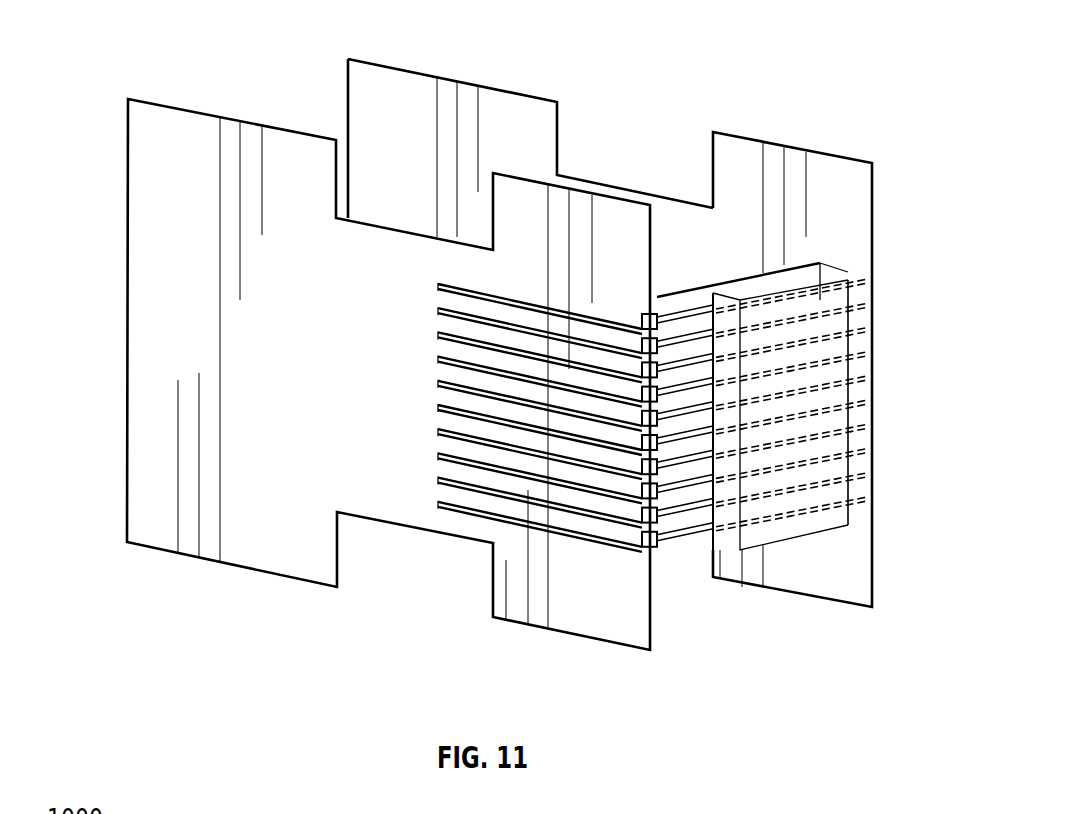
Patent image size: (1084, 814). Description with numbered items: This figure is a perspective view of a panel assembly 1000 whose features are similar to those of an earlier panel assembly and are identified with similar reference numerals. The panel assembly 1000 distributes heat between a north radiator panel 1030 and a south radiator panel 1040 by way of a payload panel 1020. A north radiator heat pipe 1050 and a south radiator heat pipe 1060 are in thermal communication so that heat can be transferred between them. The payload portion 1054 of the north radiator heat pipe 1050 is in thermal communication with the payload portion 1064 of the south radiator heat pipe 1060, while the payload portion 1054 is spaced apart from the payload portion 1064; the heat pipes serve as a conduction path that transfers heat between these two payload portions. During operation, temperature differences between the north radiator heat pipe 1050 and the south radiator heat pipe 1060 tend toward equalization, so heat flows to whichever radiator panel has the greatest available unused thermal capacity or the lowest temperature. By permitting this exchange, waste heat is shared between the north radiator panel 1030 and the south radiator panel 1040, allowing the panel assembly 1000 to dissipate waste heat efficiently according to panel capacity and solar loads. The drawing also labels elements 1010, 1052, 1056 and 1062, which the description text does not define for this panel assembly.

The panel assembly 1000 is at (148, 38).
The connector 1010 is at (820, 270).
The payload panel 1020 is at (852, 272).
The north radiator panel 1030 is at (157, 150).
The south radiator panel 1040 is at (822, 195).
The north radiator heat pipe 1050 is at (552, 530).
The contact pad 1052 is at (647, 553).
The payload portion 1054 is at (700, 555).
The insulating layer 1056 is at (480, 512).
The south radiator heat pipe 1060 is at (855, 490).
The terminal 1062 is at (857, 498).
The payload portion 1064 is at (710, 523).